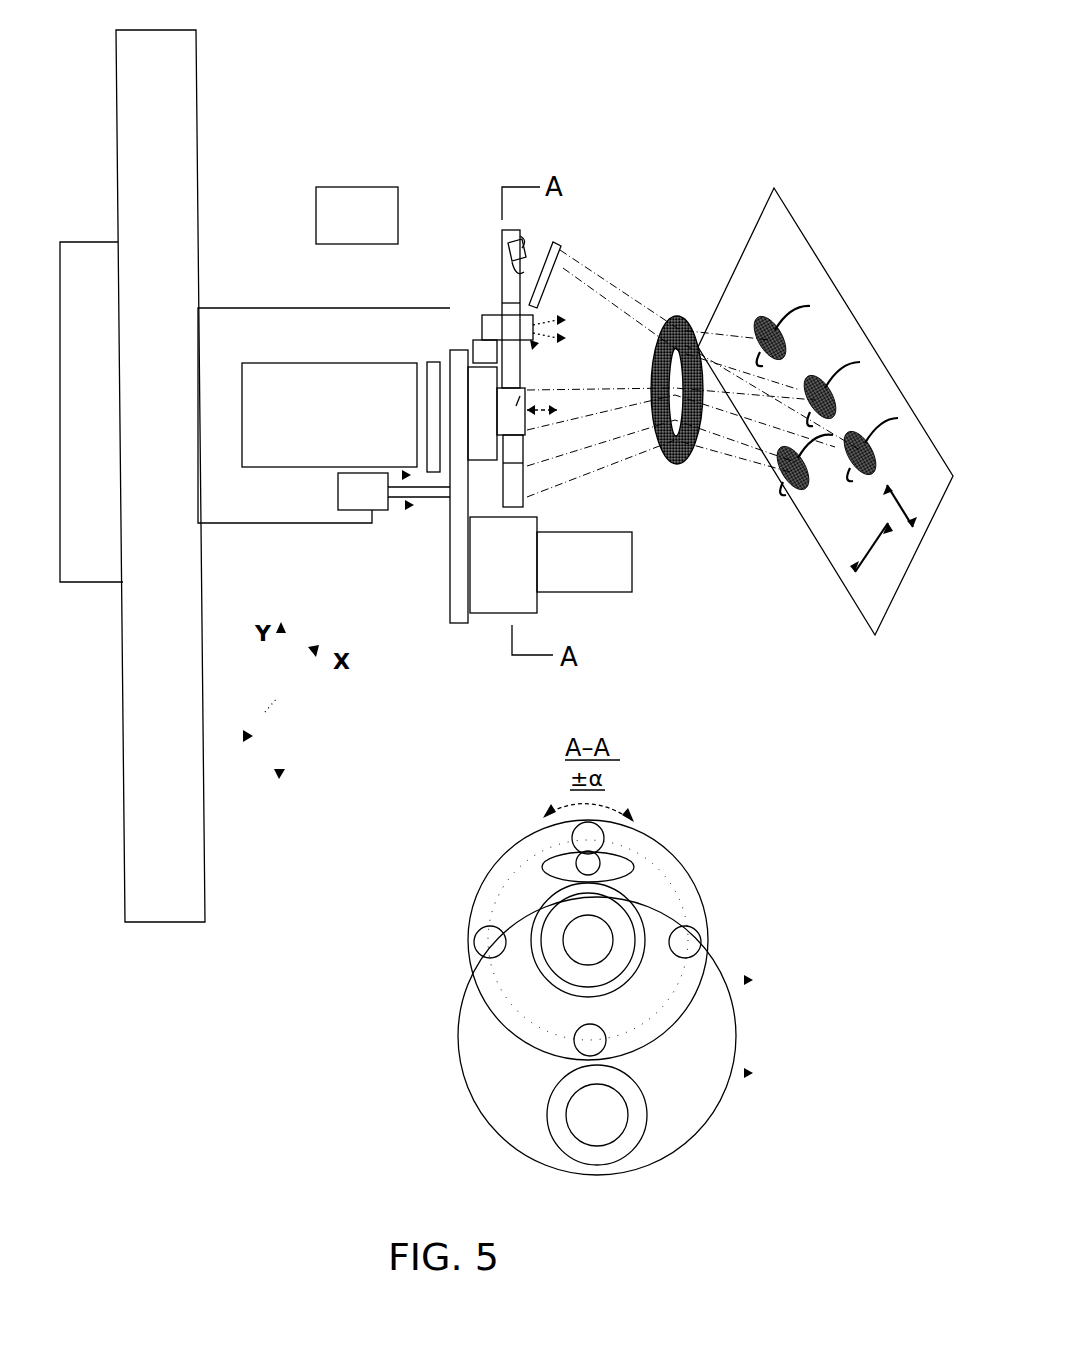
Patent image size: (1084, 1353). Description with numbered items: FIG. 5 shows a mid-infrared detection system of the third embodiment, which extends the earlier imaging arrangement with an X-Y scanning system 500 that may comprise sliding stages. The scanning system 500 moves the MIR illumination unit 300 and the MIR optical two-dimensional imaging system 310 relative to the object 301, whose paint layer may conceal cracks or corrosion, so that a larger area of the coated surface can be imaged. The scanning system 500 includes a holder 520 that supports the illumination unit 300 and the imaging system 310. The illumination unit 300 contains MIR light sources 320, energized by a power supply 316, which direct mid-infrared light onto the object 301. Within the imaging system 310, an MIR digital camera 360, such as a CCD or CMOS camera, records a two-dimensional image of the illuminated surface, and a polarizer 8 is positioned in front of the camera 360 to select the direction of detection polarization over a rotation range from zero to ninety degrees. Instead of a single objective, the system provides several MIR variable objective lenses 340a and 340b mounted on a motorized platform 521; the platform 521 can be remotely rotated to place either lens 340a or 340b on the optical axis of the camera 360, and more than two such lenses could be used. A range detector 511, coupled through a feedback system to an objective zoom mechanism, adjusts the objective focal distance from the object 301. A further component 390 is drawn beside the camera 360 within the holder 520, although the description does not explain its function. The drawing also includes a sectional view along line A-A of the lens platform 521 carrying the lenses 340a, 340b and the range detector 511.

The MIR illumination unit 300 is at (630, 192).
The object 301 is at (825, 411).
The MIR optical 2-D imaging system 310 is at (272, 168).
The power supply 316 is at (507, 248).
The MIR light sources 320 is at (590, 835).
The MIR variable objective lens 340a is at (527, 392).
The MIR variable objective lens 340b is at (693, 1162).
The MIR digital camera 360 is at (329, 415).
The actuator 390 is at (350, 510).
The X-Y scanning system 500 is at (129, 476).
The range detector 511 is at (600, 858).
The holder 520 is at (324, 415).
The motorized platform 521 is at (450, 578).
The polarizer 8 is at (427, 362).